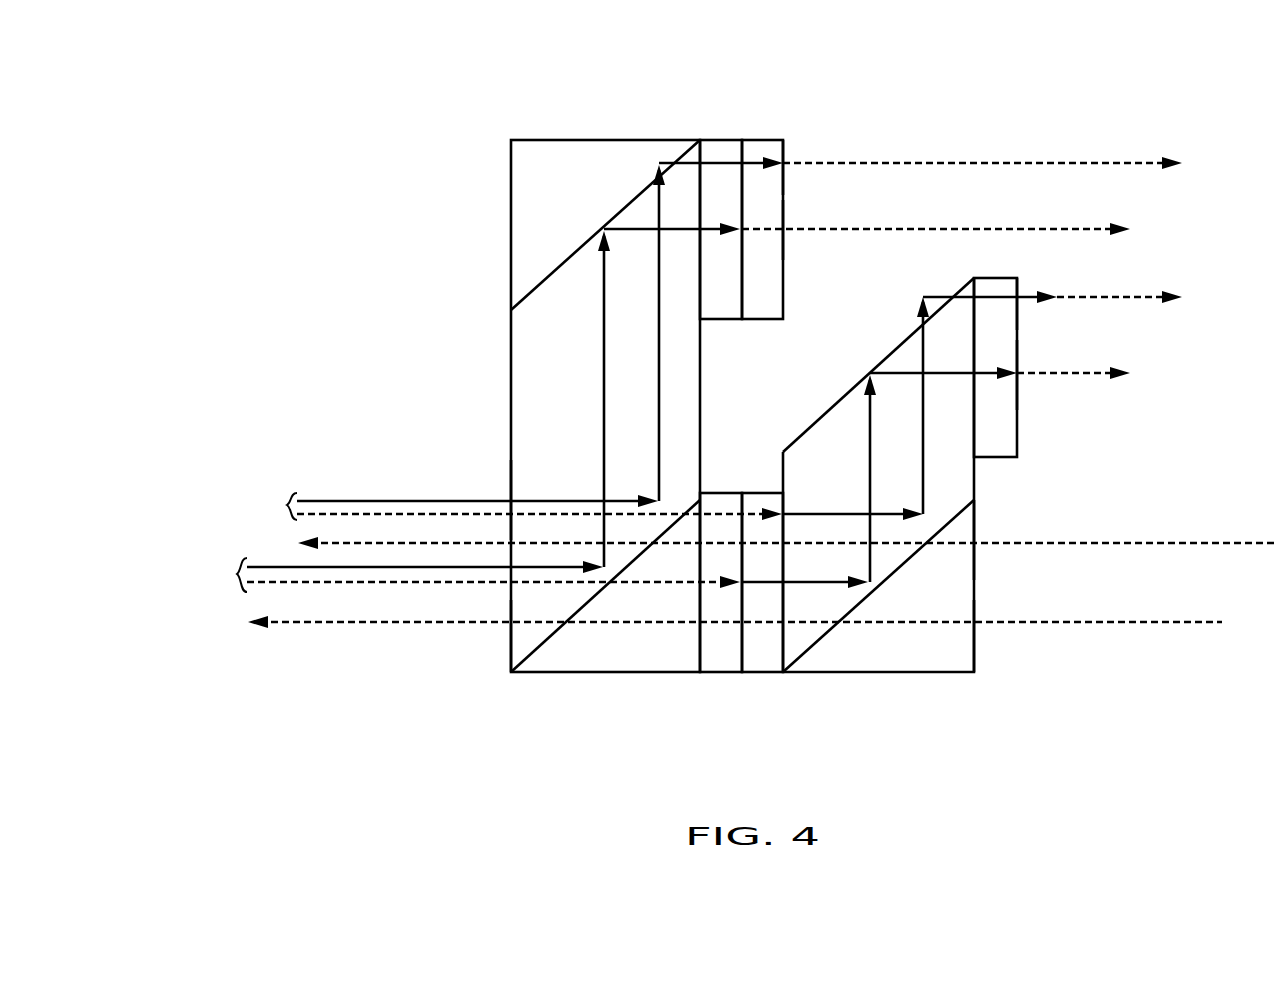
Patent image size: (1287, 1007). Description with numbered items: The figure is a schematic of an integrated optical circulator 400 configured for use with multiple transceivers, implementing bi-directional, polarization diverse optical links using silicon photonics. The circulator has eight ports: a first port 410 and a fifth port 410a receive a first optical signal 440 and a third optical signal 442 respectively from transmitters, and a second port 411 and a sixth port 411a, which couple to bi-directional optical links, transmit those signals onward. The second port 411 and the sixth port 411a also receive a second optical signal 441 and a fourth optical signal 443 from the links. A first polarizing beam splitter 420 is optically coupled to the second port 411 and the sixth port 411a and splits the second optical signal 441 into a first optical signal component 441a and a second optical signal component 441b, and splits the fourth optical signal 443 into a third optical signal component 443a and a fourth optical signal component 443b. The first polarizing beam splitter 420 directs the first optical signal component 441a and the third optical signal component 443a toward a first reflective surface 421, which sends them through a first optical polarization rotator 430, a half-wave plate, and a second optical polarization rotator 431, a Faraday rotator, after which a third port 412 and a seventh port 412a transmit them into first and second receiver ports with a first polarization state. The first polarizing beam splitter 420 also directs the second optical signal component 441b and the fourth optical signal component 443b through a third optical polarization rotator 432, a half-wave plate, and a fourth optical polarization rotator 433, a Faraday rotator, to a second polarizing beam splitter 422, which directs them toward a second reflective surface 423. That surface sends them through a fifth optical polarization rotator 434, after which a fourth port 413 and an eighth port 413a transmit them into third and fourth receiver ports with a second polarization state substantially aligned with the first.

The integrated optical circulator 400 is at (258, 122).
The first port 410 is at (976, 624).
The fifth port 410a is at (976, 545).
The second port 411 is at (511, 612).
The sixth port 411a is at (511, 500).
The third port 412 is at (790, 232).
The seventh port 412a is at (796, 162).
The fourth port 413 is at (1020, 378).
The eighth port 413a is at (1027, 300).
The first polarizing beam splitter 420 is at (545, 646).
The first reflective surface 421 is at (569, 265).
The second polarizing beam splitter 422 is at (818, 646).
The second reflective surface 423 is at (870, 373).
The first optical polarization rotator 430 is at (712, 148).
The second optical polarization rotator 431 is at (766, 148).
The third optical polarization rotator 432 is at (713, 660).
The fourth optical polarization rotator 433 is at (750, 660).
The fifth optical polarization rotator 434 is at (995, 282).
The first optical signal 440 is at (1157, 630).
The second optical signal 441 is at (237, 566).
The first optical signal component 441a is at (603, 395).
The second optical signal component 441b is at (637, 582).
The third optical signal 442 is at (1121, 542).
The fourth optical signal 443 is at (287, 500).
The third optical signal component 443a is at (657, 358).
The fourth optical signal component 443b is at (672, 500).